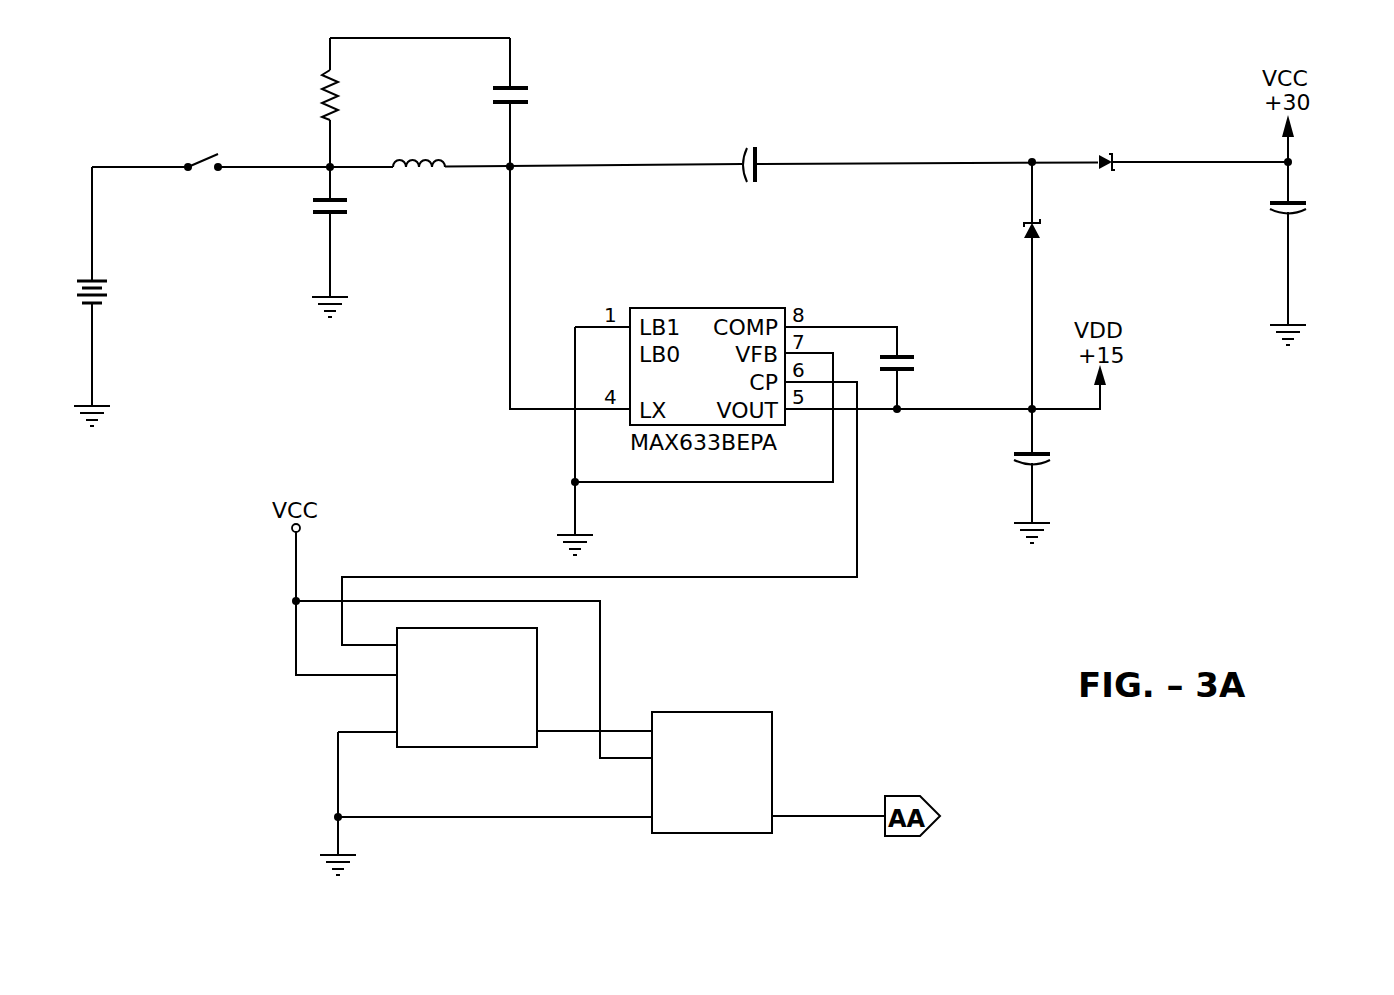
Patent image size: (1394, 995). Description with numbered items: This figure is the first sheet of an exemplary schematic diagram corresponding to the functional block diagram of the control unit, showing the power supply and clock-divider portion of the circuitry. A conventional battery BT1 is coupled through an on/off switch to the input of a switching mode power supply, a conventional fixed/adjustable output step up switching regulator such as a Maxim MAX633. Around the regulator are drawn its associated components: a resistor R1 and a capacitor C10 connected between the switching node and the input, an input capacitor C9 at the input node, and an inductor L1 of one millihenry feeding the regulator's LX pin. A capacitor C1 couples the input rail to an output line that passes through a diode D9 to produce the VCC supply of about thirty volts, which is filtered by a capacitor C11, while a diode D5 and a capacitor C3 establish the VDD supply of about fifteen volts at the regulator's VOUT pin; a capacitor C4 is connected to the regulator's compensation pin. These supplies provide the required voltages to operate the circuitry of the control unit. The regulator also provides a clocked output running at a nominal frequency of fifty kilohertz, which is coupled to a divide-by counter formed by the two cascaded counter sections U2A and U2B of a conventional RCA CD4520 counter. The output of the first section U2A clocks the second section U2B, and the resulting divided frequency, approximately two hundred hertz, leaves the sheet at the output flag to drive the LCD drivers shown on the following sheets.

The battery BT1 is at (124, 294).
The resistor 920 ohm R1 is at (355, 93).
The capacitor 11UF 50V C9 is at (363, 243).
The capacitor 390PF C10 is at (548, 95).
The inductor 1MH L1 is at (419, 164).
The capacitor 10UF 25V C1 is at (750, 179).
The diode ZC5800E D9 is at (1112, 160).
The zener diode ZC5800E D5 is at (1086, 242).
The capacitor 47UF 50V C11 is at (1324, 222).
The capacitor 100PF C4 is at (935, 365).
The capacitor 100UF 25V C3 is at (1074, 476).
The counter CD4520BCM section A U2A is at (466, 692).
The counter CD4520BCM section B U2B is at (711, 774).